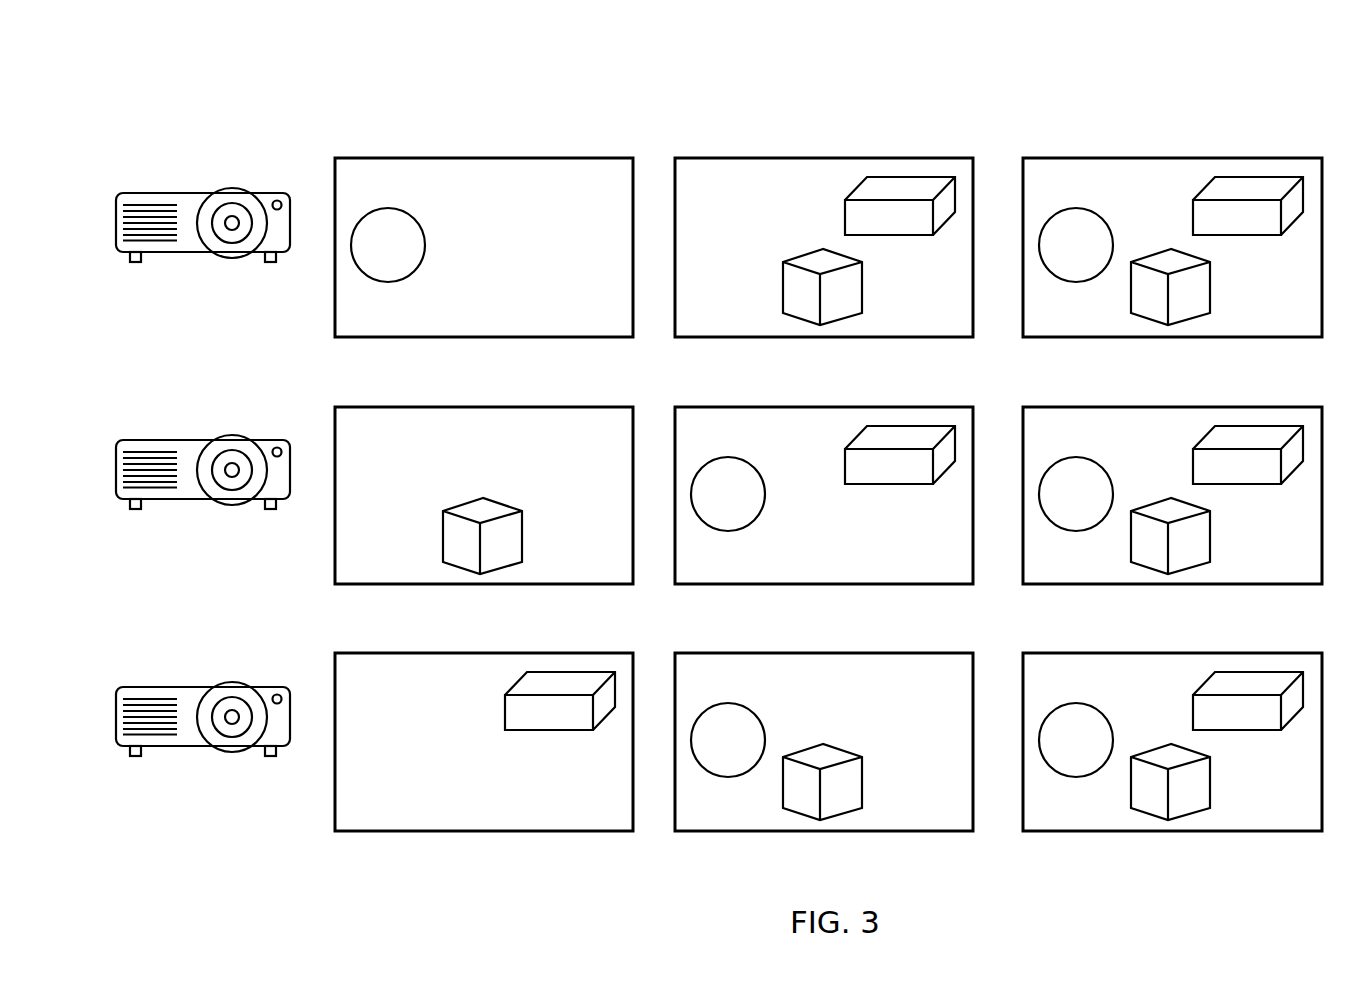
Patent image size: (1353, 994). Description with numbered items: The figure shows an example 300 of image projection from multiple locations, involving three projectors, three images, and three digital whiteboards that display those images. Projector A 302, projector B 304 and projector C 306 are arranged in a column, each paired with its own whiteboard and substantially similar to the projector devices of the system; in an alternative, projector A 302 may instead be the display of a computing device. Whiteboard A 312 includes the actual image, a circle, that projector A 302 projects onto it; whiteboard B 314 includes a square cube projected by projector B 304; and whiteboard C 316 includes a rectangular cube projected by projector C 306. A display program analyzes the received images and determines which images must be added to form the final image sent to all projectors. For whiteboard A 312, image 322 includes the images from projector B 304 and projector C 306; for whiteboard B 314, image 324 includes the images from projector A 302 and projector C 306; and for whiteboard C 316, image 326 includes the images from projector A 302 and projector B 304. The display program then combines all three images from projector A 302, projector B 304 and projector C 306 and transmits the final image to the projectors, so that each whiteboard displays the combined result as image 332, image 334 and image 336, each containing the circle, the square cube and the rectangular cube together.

The example 300 is at (1178, 62).
The projector A 302 is at (165, 193).
The projector B 304 is at (165, 440).
The projector C 306 is at (165, 687).
The whiteboard A 312 is at (607, 313).
The whiteboard B 314 is at (607, 559).
The whiteboard C 316 is at (607, 806).
The image 322 is at (947, 313).
The image 324 is at (947, 559).
The image 326 is at (947, 806).
The image 332 is at (1295, 313).
The image 334 is at (1295, 559).
The image 336 is at (1295, 806).